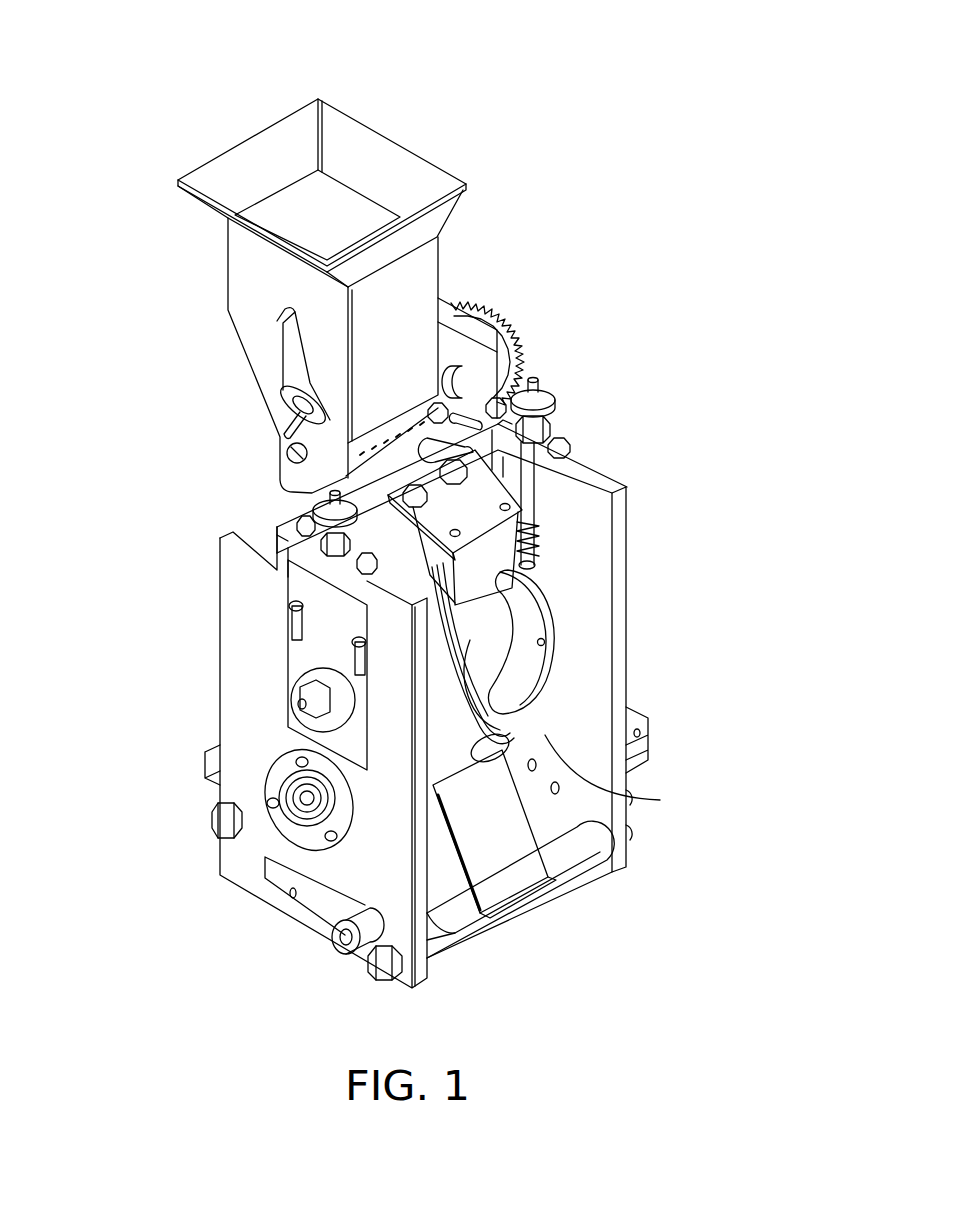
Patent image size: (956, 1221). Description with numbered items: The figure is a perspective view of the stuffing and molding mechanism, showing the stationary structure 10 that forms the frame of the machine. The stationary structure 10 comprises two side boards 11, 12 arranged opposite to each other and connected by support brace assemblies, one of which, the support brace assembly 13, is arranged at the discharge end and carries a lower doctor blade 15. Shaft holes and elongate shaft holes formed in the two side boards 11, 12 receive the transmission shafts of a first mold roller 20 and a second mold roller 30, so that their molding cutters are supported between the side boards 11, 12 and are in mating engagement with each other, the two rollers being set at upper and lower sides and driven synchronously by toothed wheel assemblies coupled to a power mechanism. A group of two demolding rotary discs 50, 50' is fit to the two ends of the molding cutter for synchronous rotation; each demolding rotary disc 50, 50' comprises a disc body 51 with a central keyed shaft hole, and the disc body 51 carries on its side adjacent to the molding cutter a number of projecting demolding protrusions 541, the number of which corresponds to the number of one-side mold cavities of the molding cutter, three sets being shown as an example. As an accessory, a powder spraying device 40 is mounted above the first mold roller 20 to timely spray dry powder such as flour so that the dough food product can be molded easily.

The stationary structure 10 is at (621, 452).
The side board 11 is at (622, 530).
The side board 12 is at (232, 612).
The support brace assembly 13 is at (467, 930).
The lower doctor blade 15 is at (513, 862).
The first mold roller 20 is at (264, 790).
The second mold roller 30 is at (292, 697).
The powder spraying device 40 is at (412, 128).
The demolding rotary disc 50 is at (596, 642).
The demolding rotary disc 50' is at (337, 781).
The disc body 51 is at (528, 695).
The demolding protrusion 541 is at (548, 642).